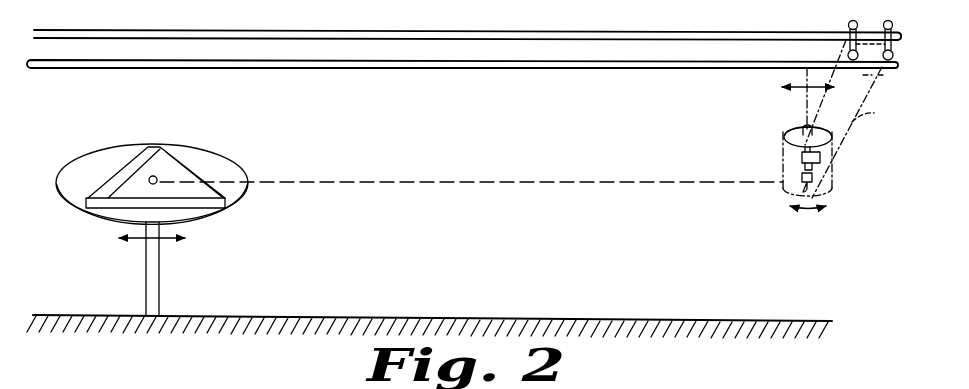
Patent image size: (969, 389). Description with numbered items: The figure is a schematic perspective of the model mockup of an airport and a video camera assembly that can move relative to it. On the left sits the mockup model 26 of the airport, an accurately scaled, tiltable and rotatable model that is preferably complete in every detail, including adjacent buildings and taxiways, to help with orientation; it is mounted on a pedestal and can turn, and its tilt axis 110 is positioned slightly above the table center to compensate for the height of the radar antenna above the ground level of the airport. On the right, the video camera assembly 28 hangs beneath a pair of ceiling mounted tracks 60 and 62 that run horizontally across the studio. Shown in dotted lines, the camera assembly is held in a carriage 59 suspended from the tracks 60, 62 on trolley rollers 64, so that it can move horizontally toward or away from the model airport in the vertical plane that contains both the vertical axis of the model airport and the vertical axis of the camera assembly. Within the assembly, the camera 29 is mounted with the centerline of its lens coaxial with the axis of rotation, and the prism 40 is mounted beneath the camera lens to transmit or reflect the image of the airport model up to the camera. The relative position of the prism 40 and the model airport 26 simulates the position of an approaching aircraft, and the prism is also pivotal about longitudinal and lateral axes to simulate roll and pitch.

The mockup model 26 is at (252, 160).
The video camera assembly 28 is at (777, 166).
The camera 29 is at (820, 158).
The prism 40 is at (813, 180).
The carriage 59 is at (832, 119).
The ceiling mounted track 60 is at (632, 70).
The ceiling mounted track 62 is at (676, 24).
The trolley rollers 64 is at (849, 23).
The tilt axis 110 is at (156, 177).